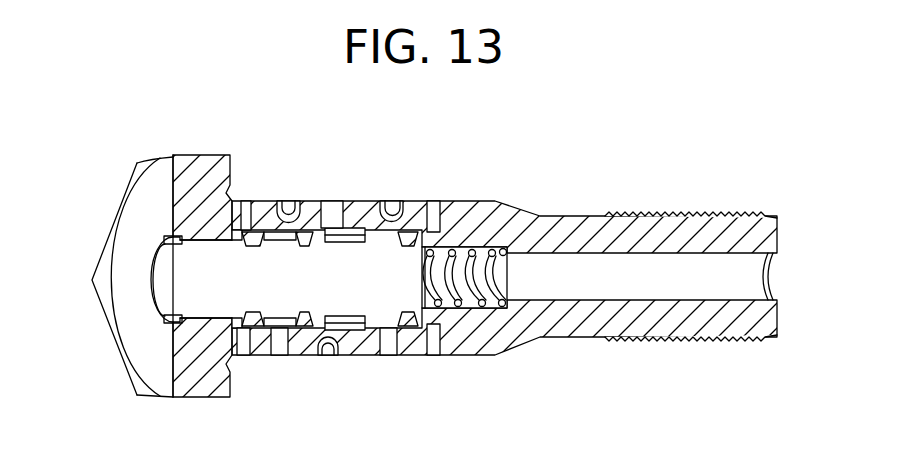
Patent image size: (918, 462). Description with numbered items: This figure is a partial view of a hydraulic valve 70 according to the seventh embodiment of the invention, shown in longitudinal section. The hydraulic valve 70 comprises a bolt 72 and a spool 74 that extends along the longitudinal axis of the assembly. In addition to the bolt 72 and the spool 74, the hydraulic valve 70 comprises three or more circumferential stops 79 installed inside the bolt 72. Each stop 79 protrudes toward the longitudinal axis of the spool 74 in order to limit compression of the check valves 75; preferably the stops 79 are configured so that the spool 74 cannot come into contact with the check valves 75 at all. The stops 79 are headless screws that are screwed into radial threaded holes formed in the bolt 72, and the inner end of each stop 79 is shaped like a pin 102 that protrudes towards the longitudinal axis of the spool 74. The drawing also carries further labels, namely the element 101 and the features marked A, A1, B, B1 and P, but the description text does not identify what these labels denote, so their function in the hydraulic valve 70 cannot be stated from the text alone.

The hydraulic valve 70 is at (97, 187).
The bolt 72 is at (200, 156).
The spool 74 is at (213, 316).
The check valves 75 is at (381, 316).
The circumferential stops 79 is at (388, 200).
The slot 101 is at (363, 358).
The pin 102 is at (423, 200).
The body A is at (438, 200).
The slot A1 is at (391, 352).
The slot B is at (242, 200).
The slot B1 is at (281, 352).
The port P is at (333, 200).